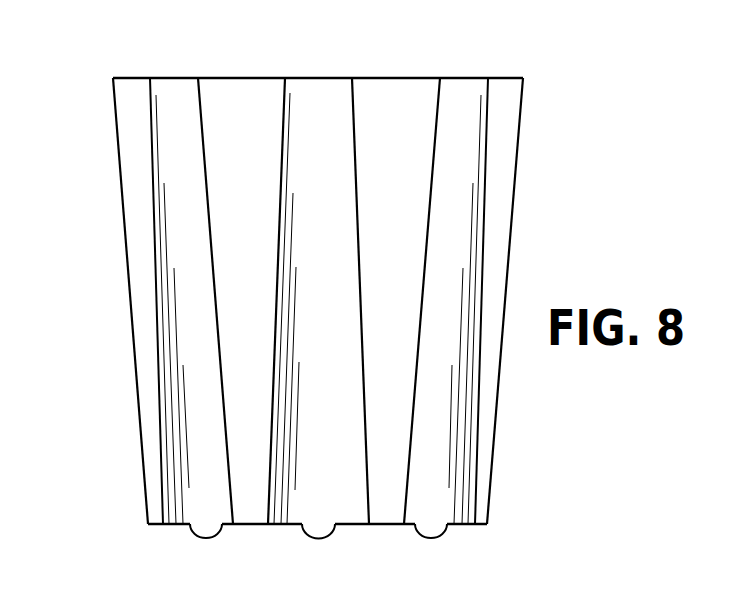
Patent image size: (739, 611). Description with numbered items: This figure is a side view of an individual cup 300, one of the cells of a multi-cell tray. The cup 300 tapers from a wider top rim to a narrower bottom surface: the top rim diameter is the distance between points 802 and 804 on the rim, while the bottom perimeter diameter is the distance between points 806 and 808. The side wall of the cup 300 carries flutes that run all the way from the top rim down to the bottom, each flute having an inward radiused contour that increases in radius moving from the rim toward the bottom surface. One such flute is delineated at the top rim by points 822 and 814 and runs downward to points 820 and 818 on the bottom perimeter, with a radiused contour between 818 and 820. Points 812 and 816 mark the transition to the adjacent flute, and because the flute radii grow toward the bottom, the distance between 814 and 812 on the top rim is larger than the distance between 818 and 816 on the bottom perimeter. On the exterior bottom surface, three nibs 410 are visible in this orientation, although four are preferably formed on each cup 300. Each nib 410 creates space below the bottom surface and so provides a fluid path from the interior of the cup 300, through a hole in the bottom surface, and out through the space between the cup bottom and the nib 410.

The cup 300 is at (96, 153).
The top rim point 802 is at (523, 78).
The top rim point 804 is at (113, 78).
The bottom perimeter point 806 is at (148, 524).
The bottom perimeter point 808 is at (487, 524).
The top corner point 812 is at (198, 78).
The top corner point 814 is at (285, 78).
The bottom corner point 816 is at (233, 524).
The bottom corner point 818 is at (268, 524).
The bottom corner point 820 is at (369, 524).
The top corner point 822 is at (352, 78).
The nib 410 is at (431, 538).